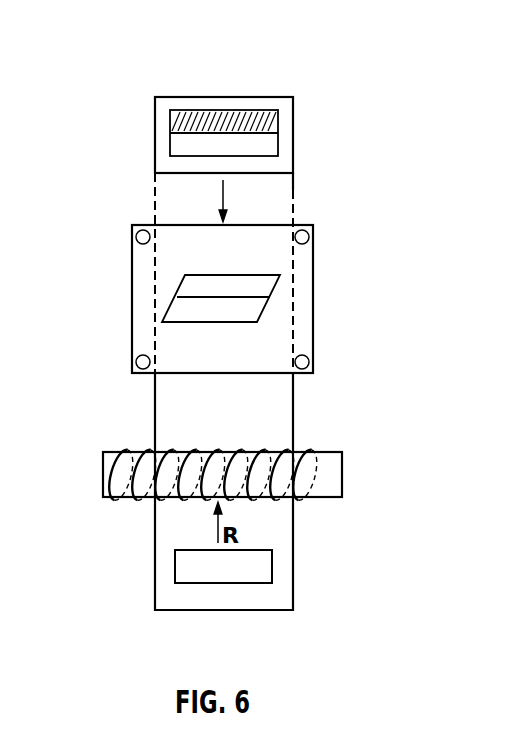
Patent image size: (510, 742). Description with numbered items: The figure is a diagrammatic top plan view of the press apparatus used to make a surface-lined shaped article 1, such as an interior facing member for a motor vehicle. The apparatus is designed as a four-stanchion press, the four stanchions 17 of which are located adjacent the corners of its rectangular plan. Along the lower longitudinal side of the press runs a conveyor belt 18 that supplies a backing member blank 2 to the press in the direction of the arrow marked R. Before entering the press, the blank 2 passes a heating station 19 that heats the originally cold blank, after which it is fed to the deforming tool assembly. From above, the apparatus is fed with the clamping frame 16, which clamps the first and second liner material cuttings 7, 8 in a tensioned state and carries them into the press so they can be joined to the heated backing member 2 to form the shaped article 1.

The shaped article 1 is at (263, 315).
The backing member 2 is at (245, 567).
The first liner material cutting 7 is at (190, 115).
The second liner material cutting 8 is at (183, 143).
The clamping frame 16 is at (293, 97).
The stanchions 17 is at (133, 223).
The conveyor belt 18 is at (155, 543).
The heating station 19 is at (102, 472).